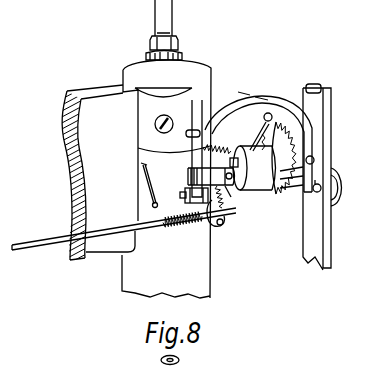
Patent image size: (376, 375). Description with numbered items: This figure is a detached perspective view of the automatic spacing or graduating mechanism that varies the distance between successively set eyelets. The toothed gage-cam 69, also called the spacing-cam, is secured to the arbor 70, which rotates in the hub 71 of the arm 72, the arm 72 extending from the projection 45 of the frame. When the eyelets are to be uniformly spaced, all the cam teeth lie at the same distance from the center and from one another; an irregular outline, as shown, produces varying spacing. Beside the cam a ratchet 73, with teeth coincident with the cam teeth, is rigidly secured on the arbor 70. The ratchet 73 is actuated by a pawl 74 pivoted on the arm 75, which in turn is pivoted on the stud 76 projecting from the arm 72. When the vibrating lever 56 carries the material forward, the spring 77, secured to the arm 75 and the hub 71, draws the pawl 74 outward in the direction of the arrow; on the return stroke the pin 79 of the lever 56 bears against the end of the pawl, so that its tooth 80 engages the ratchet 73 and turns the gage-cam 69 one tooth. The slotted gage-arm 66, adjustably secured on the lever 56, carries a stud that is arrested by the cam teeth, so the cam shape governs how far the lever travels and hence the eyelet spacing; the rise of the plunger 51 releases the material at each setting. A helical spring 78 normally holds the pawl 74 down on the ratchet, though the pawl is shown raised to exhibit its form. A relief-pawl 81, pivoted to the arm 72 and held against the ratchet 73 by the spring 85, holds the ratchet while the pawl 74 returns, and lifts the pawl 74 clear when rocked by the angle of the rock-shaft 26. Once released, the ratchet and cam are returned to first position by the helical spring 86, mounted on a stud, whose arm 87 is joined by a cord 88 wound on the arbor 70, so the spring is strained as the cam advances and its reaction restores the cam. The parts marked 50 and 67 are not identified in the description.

The rock-shaft 26 is at (124, 239).
The projection of the frame 45 is at (135, 179).
The shaft 50 is at (164, 25).
The plunger 51 is at (183, 55).
The vibrating arm (lever) 56 is at (317, 186).
The slotted gage-arm 66 is at (341, 180).
The pivot pin 67 is at (313, 196).
The toothed gage-cam (spacing-cam) 69 is at (284, 158).
The arbor 70 is at (211, 176).
The hub 71 is at (253, 168).
The arm 72 is at (218, 228).
The ratchet 73 is at (272, 192).
The pawl 74 is at (258, 142).
The arm 75 is at (192, 163).
The stud 76 is at (186, 200).
The spring 77 is at (217, 155).
The helical spring 78 is at (261, 140).
The pin 79 is at (315, 160).
The tooth 80 is at (271, 115).
The relief-pawl 81 is at (225, 197).
The spring 85 is at (219, 210).
The helical spring 86 is at (180, 229).
The arm 87 is at (152, 205).
The cord 88 is at (157, 183).